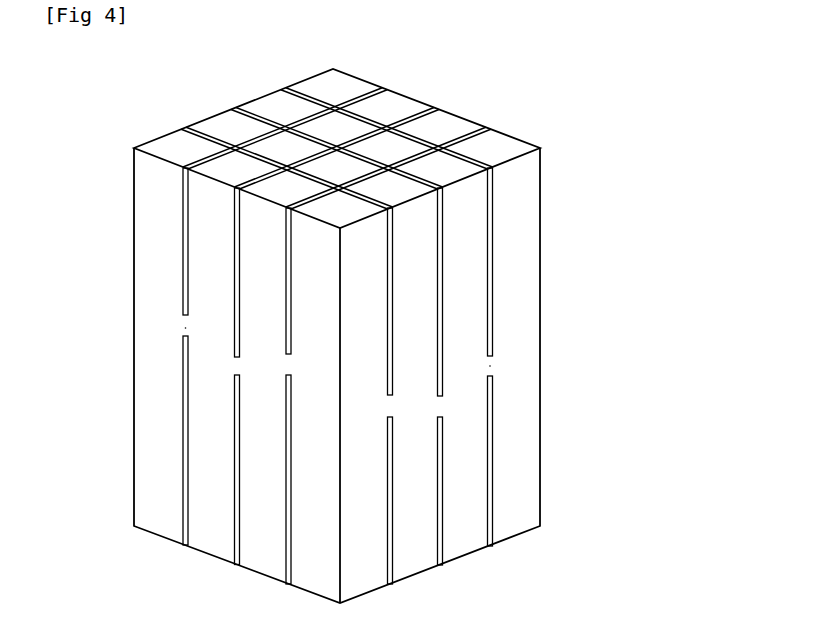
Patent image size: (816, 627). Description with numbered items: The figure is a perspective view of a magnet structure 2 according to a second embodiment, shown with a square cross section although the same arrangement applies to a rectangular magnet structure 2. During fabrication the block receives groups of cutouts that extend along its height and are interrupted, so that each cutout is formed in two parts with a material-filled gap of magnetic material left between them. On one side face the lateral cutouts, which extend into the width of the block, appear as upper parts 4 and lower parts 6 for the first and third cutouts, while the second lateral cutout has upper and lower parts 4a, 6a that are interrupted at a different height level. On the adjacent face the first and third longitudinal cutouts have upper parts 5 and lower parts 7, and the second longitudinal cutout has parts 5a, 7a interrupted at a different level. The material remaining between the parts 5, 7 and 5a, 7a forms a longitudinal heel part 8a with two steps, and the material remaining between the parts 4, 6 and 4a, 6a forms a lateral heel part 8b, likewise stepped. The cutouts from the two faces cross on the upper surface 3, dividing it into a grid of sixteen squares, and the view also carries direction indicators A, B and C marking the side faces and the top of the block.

The magnet structure 2 is at (566, 140).
The top surface 3 is at (183, 150).
The first part of lateral cutout 4 is at (492, 217).
The first part of second lateral cutout 4a is at (442, 267).
The first part of longitudinal cutout 5 is at (185, 211).
The first part of second longitudinal cutout 5a is at (237, 282).
The second part of lateral cutout 6 is at (492, 394).
The second part of second lateral cutout 6a is at (442, 457).
The second part of longitudinal cutout 7 is at (185, 393).
The second part of second longitudinal cutout 7a is at (237, 423).
The longitudinal heel part 8a is at (185, 329).
The lateral heel part 8b is at (492, 365).
The direction A is at (207, 577).
The direction B is at (480, 570).
The direction C is at (482, 106).